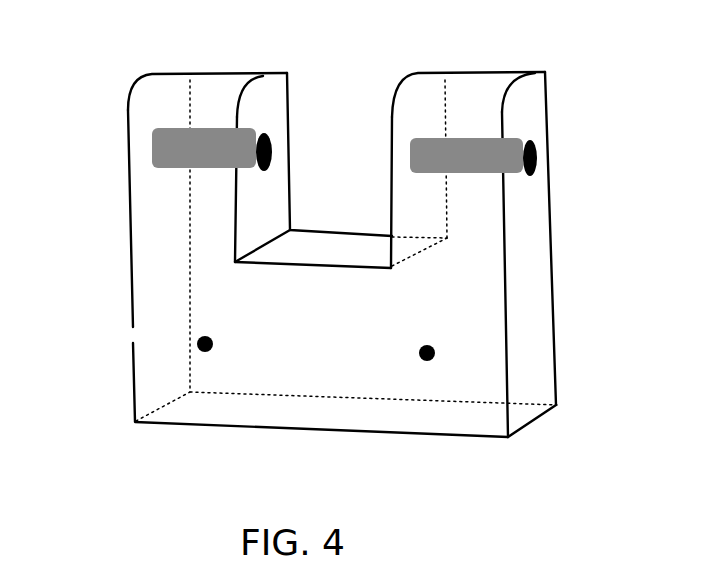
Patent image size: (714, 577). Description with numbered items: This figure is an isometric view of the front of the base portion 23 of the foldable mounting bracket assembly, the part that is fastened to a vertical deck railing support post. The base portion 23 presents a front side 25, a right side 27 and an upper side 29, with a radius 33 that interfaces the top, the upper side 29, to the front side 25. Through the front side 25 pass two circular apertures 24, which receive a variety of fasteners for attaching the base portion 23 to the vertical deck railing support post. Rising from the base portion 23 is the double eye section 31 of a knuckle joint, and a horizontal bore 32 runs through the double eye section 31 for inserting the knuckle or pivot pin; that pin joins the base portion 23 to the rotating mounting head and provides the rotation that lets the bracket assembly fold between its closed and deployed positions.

The base portion 23 is at (375, 303).
The circular apertures 24 is at (205, 358).
The front side 25 is at (252, 308).
The right side 27 is at (533, 342).
The upper side 29 is at (336, 69).
The double eye section of knuckle joint 31 is at (340, 208).
The horizontal bore 32 is at (386, 131).
The radius 33 is at (312, 132).